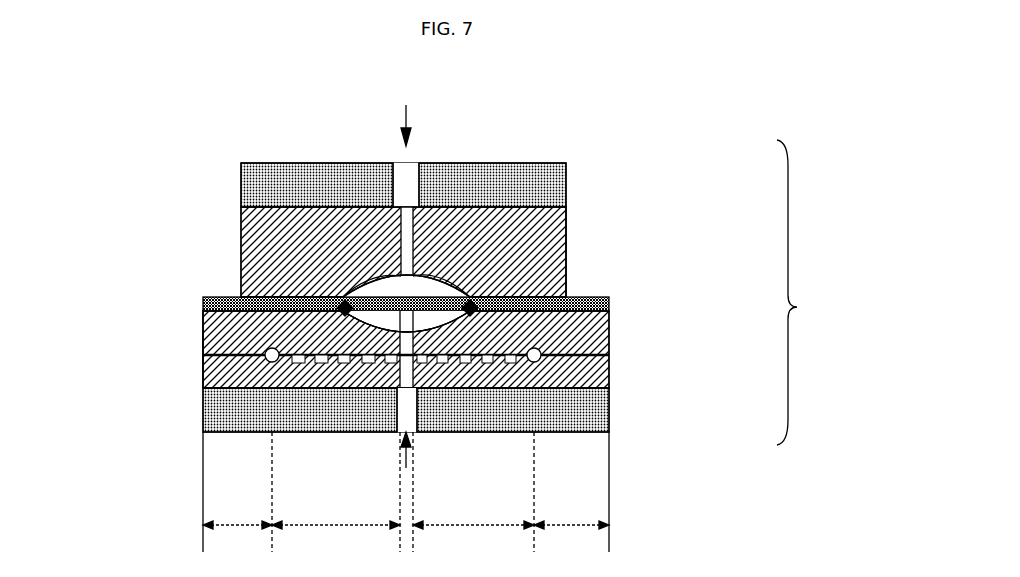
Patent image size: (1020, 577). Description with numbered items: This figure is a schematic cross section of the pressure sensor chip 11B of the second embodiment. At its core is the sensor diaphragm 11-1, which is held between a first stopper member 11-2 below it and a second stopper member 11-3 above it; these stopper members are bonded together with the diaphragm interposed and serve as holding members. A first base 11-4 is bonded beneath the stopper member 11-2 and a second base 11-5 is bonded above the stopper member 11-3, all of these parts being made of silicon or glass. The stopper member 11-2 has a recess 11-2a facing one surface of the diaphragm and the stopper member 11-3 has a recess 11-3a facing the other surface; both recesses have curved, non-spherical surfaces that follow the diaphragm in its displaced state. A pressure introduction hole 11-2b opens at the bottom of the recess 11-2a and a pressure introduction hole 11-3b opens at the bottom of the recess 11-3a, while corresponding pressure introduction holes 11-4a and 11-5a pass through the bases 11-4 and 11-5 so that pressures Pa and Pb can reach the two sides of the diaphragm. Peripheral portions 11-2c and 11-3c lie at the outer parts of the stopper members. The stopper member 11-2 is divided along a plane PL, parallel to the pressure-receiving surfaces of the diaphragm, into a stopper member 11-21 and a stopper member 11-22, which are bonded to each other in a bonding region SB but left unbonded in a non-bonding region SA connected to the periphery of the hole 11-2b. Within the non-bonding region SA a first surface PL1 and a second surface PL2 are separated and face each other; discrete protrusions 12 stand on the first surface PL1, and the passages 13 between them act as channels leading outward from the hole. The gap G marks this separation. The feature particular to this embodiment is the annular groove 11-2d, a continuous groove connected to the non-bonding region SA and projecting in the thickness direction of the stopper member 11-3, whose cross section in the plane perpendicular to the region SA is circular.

The pressure sensor chip 11B is at (807, 292).
The second base 11-5 is at (567, 176).
The pressure introduction hole 11-5a is at (386, 162).
The second stopper member 11-3 is at (567, 226).
The recess 11-3a is at (428, 288).
The pressure introduction hole 11-3b is at (338, 296).
The peripheral portion 11-3c is at (280, 297).
The sensor diaphragm 11-1 is at (609, 303).
The first stopper member 11-2 is at (609, 337).
The stopper member 11-21 is at (215, 333).
The stopper member 11-22 is at (215, 372).
The recess 11-2a is at (423, 325).
The pressure introduction hole 11-2b is at (390, 362).
The peripheral portion 11-2c is at (205, 367).
The annular groove 11-2d is at (262, 400).
The first base 11-4 is at (609, 410).
The pressure introduction hole 11-4a is at (397, 412).
The protrusion 12 is at (567, 288).
The passage 13 is at (478, 318).
The gap / gate point G is at (345, 306).
The plane PL is at (215, 357).
The first surface PL1 is at (272, 434).
The second surface PL2 is at (306, 297).
The lower pressure Pa is at (421, 450).
The upper pressure Pb is at (406, 111).
The non-bonding region SA is at (403, 516).
The bonding region SB is at (406, 516).